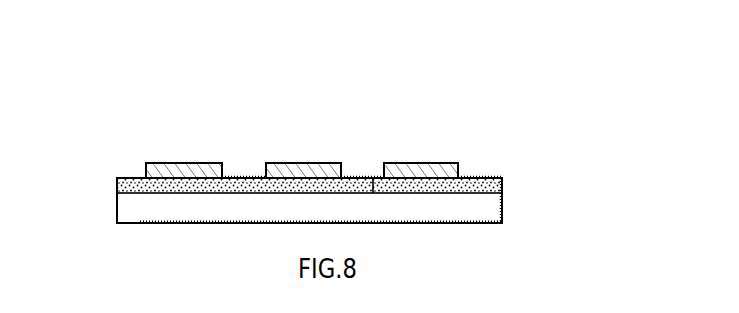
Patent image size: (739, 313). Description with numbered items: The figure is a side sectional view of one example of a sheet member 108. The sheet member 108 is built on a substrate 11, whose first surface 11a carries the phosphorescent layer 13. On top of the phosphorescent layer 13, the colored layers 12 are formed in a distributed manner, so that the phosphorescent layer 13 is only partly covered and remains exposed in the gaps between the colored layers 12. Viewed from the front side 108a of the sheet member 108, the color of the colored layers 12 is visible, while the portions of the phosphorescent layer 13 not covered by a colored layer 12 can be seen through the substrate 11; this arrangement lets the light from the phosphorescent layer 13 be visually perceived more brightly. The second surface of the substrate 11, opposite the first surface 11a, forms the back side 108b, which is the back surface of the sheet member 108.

The sheet member 108 is at (117, 149).
The substrate 11 is at (488, 208).
The first surface 11a is at (373, 178).
The colored layers 12 is at (180, 163).
The phosphorescent layer 13 is at (487, 186).
The front side 108a is at (479, 177).
The back side 108b is at (445, 223).